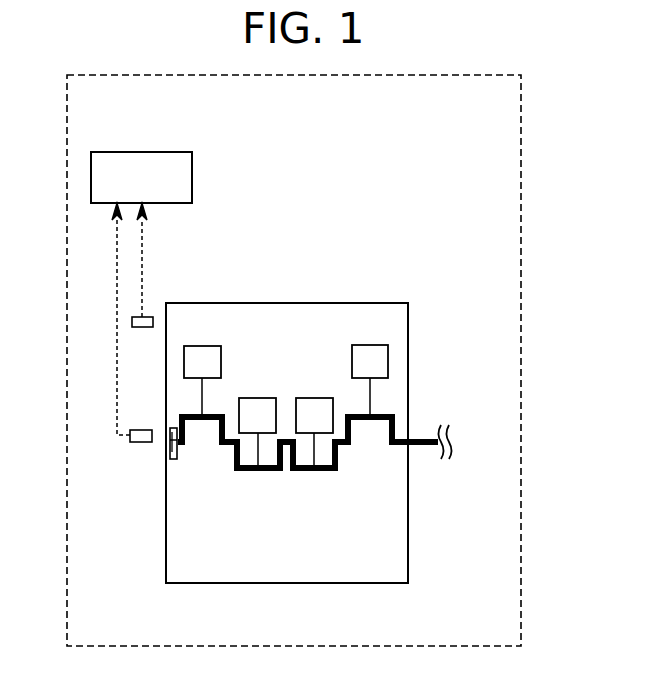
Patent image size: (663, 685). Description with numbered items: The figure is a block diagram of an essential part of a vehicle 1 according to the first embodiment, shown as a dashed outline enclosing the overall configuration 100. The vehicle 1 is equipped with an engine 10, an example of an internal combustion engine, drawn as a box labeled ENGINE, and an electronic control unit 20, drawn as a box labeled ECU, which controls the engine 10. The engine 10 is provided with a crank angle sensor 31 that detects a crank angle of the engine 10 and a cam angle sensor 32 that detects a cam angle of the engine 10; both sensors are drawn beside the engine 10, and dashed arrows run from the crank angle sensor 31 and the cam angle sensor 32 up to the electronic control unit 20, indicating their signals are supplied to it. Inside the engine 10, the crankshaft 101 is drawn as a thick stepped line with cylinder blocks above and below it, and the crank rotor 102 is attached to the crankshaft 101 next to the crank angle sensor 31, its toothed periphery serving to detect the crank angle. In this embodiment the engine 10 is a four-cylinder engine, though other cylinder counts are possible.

The vehicle 1 is at (521, 125).
The engine control system 100 is at (217, 132).
The electronic control unit 20 is at (121, 152).
The cam angle sensor 32 is at (147, 315).
The crank angle sensor 31 is at (140, 443).
The crank rotor 102 is at (172, 455).
The crankshaft 101 is at (302, 472).
The engine 10 is at (327, 583).